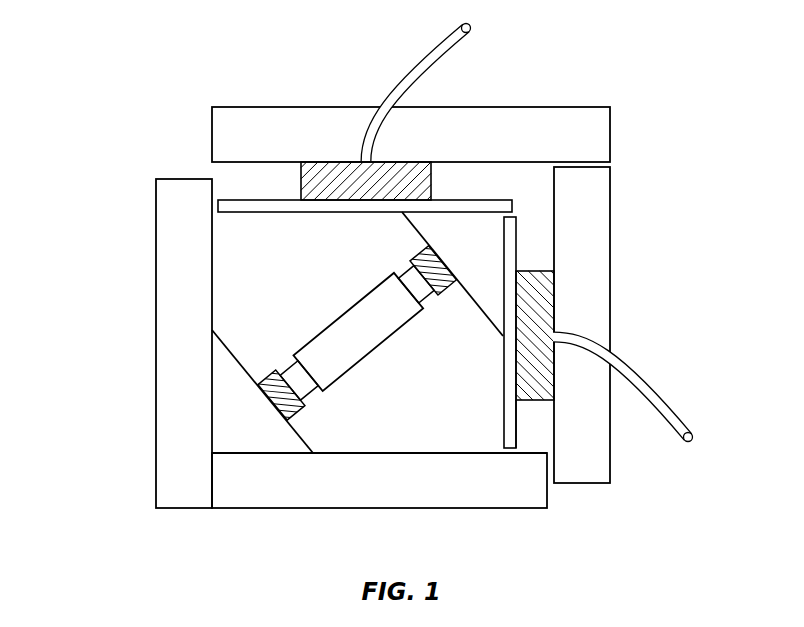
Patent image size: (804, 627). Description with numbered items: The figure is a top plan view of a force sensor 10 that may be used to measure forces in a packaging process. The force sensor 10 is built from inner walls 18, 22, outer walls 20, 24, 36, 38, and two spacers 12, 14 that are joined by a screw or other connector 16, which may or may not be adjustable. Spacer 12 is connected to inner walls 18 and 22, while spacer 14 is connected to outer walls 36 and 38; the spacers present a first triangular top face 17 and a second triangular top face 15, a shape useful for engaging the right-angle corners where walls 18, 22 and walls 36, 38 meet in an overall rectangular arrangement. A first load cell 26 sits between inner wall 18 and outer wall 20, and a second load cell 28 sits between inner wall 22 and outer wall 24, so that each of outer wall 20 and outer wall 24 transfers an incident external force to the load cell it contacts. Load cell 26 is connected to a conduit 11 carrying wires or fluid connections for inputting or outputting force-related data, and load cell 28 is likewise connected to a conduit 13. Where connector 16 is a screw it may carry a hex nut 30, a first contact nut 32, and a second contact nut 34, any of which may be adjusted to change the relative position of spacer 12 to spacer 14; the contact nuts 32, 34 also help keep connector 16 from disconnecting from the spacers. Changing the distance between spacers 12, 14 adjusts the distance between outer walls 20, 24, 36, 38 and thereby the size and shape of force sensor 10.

The force sensor 10 is at (651, 60).
The conduit 11 is at (661, 403).
The spacer 12 is at (495, 266).
The conduit 13 is at (423, 63).
The spacer 14 is at (278, 447).
The second triangular top face 15 is at (261, 433).
The connector 16 is at (430, 295).
The first triangular top face 17 is at (485, 255).
The inner wall 18 is at (517, 422).
The outer wall 20 is at (612, 201).
The inner wall 22 is at (466, 200).
The outer wall 24 is at (562, 107).
The first load cell 26 is at (556, 295).
The second load cell 28 is at (327, 162).
The hex nut 30 is at (340, 310).
The first contact nut 32 is at (410, 258).
The second contact nut 34 is at (268, 373).
The outer wall 36 is at (278, 508).
The outer wall 38 is at (156, 253).